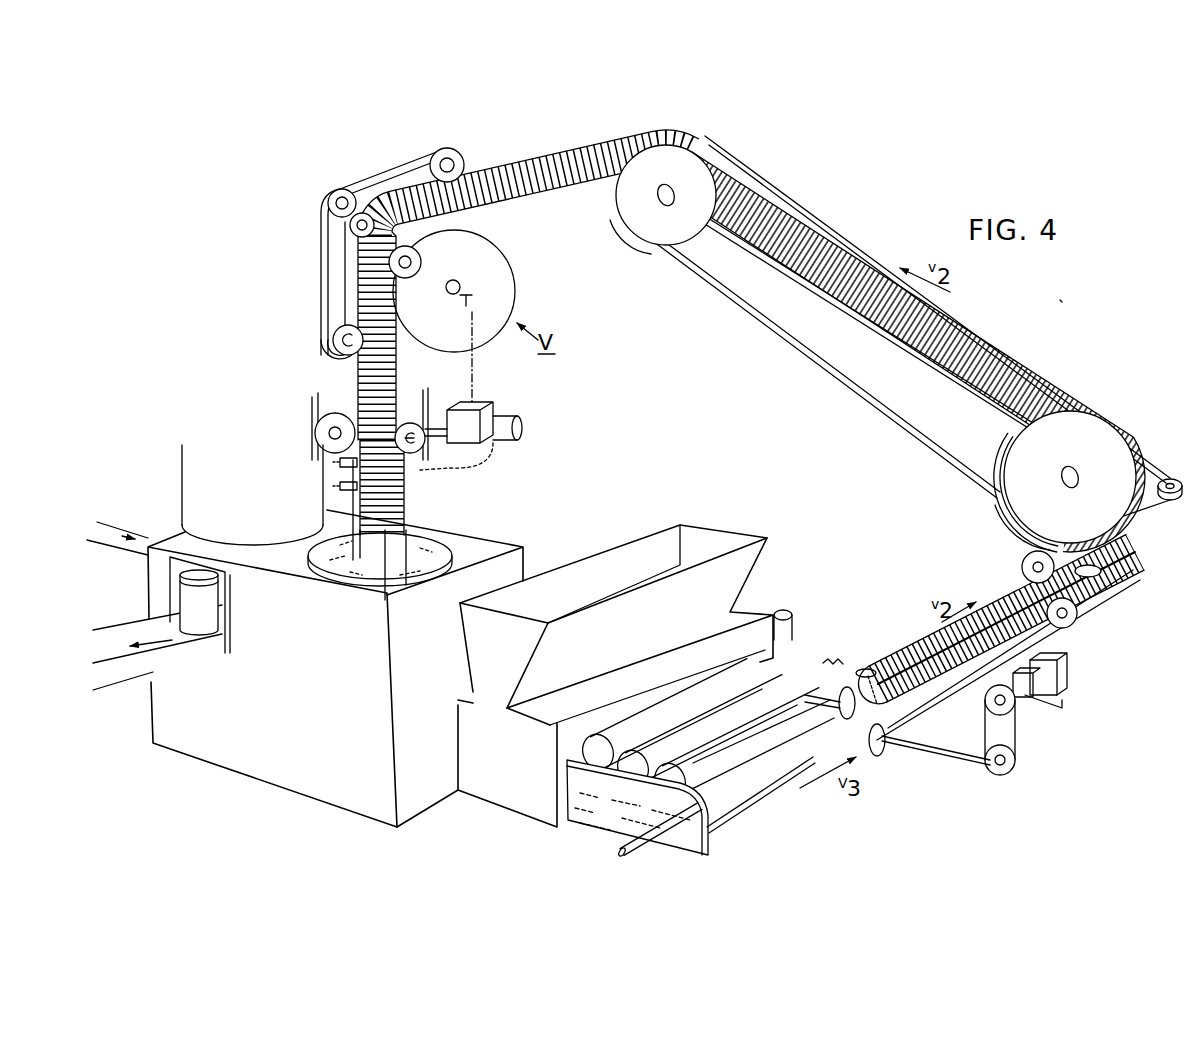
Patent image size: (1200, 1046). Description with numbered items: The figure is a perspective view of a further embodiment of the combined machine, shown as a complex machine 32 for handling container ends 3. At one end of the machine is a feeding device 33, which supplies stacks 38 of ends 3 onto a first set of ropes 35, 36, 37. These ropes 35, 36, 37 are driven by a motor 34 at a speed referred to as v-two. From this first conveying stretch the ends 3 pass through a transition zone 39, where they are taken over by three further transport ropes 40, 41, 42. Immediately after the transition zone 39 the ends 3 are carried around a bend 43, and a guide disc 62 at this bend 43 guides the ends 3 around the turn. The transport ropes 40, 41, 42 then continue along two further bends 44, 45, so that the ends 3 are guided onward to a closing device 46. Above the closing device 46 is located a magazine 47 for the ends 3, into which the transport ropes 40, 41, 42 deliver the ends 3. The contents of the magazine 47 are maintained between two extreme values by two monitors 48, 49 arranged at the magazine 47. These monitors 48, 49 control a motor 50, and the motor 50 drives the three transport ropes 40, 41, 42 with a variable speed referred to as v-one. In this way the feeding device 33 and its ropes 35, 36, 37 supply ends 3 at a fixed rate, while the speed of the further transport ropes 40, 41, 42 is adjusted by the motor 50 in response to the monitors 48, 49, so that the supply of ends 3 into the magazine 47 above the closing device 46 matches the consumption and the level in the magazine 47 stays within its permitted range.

The ends 3 is at (408, 526).
The complex machine 32 is at (1068, 327).
The feeding device 33 is at (843, 612).
The motor 34 is at (1035, 675).
The rope 35 is at (1048, 668).
The rope 36 is at (825, 715).
The rope 37 is at (1002, 603).
The stacks 38 is at (703, 750).
The transition zone 39 is at (1077, 647).
The transport rope 40 is at (533, 153).
The transport rope 41 is at (495, 175).
The transport rope 42 is at (531, 203).
The bend 43 is at (1135, 455).
The bend 44 is at (716, 143).
The bend 45 is at (435, 261).
The closing device 46 is at (236, 745).
The magazine 47 is at (413, 504).
The monitor 48 is at (340, 479).
The monitor 49 is at (346, 460).
The motor 50 is at (505, 414).
The guide disc 62 is at (1020, 447).